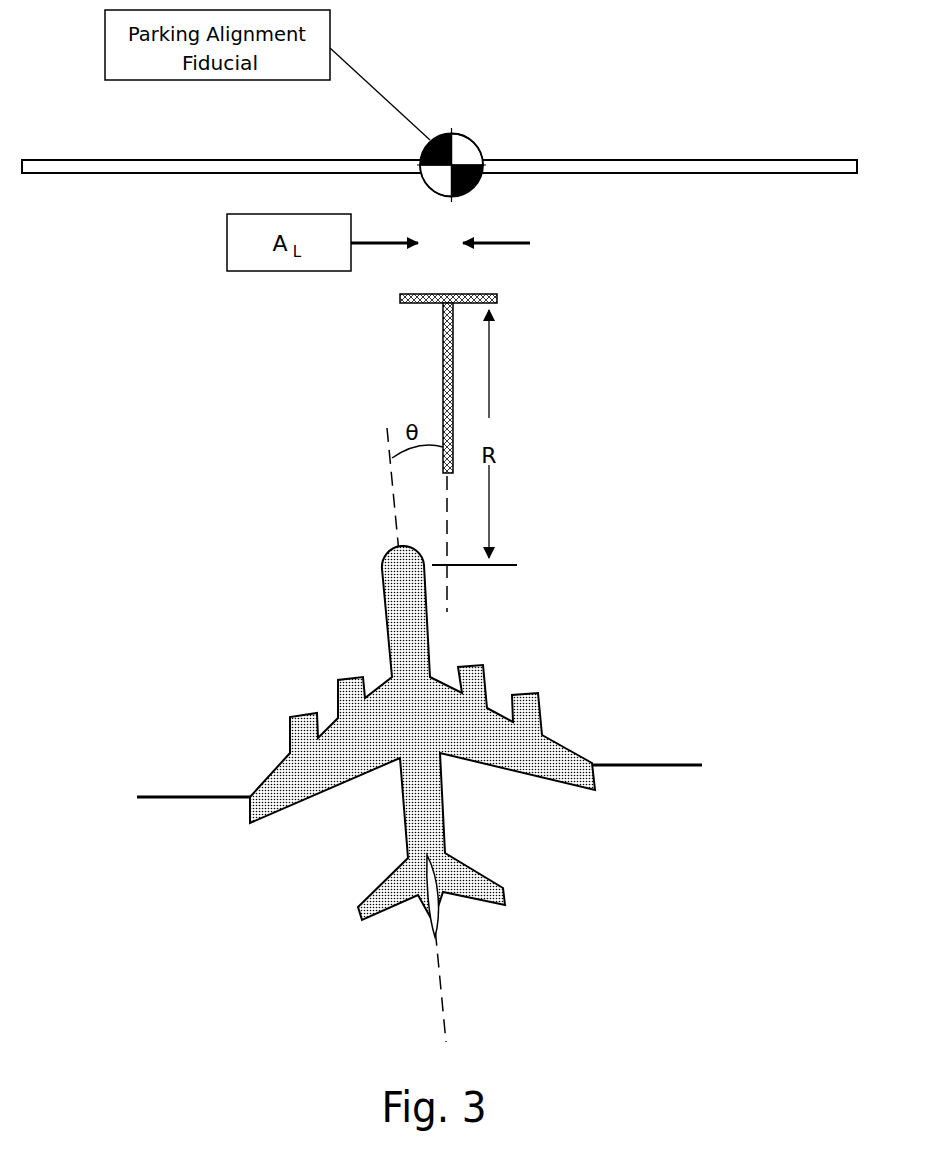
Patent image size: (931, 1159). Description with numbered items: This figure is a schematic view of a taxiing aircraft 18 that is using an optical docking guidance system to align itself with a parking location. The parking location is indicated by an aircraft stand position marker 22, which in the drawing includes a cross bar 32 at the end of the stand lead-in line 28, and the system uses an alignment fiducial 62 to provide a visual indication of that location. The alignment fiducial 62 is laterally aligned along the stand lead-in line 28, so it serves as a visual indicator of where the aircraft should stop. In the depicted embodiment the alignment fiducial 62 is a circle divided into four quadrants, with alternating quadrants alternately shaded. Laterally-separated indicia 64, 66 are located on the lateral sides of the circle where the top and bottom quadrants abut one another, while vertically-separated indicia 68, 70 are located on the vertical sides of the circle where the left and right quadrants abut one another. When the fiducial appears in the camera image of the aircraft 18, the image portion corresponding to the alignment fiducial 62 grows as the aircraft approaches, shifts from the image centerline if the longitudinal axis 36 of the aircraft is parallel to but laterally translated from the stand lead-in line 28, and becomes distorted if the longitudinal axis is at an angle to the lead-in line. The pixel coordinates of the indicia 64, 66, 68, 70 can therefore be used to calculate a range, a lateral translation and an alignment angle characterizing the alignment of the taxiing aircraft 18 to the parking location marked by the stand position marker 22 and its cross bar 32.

The taxiing aircraft 18 is at (522, 655).
The aircraft stand position marker 22 is at (445, 383).
The stand lead-in line 28 is at (443, 375).
The fixture cross bar 32 is at (410, 305).
The longitudinal axis 36 is at (437, 949).
The alignment fiducial 62 is at (448, 136).
The laterally-separated indicium 64 is at (420, 165).
The laterally-separated indicium 66 is at (483, 183).
The vertically-separated indicium 68 is at (460, 143).
The vertically-separated indicium 70 is at (452, 197).